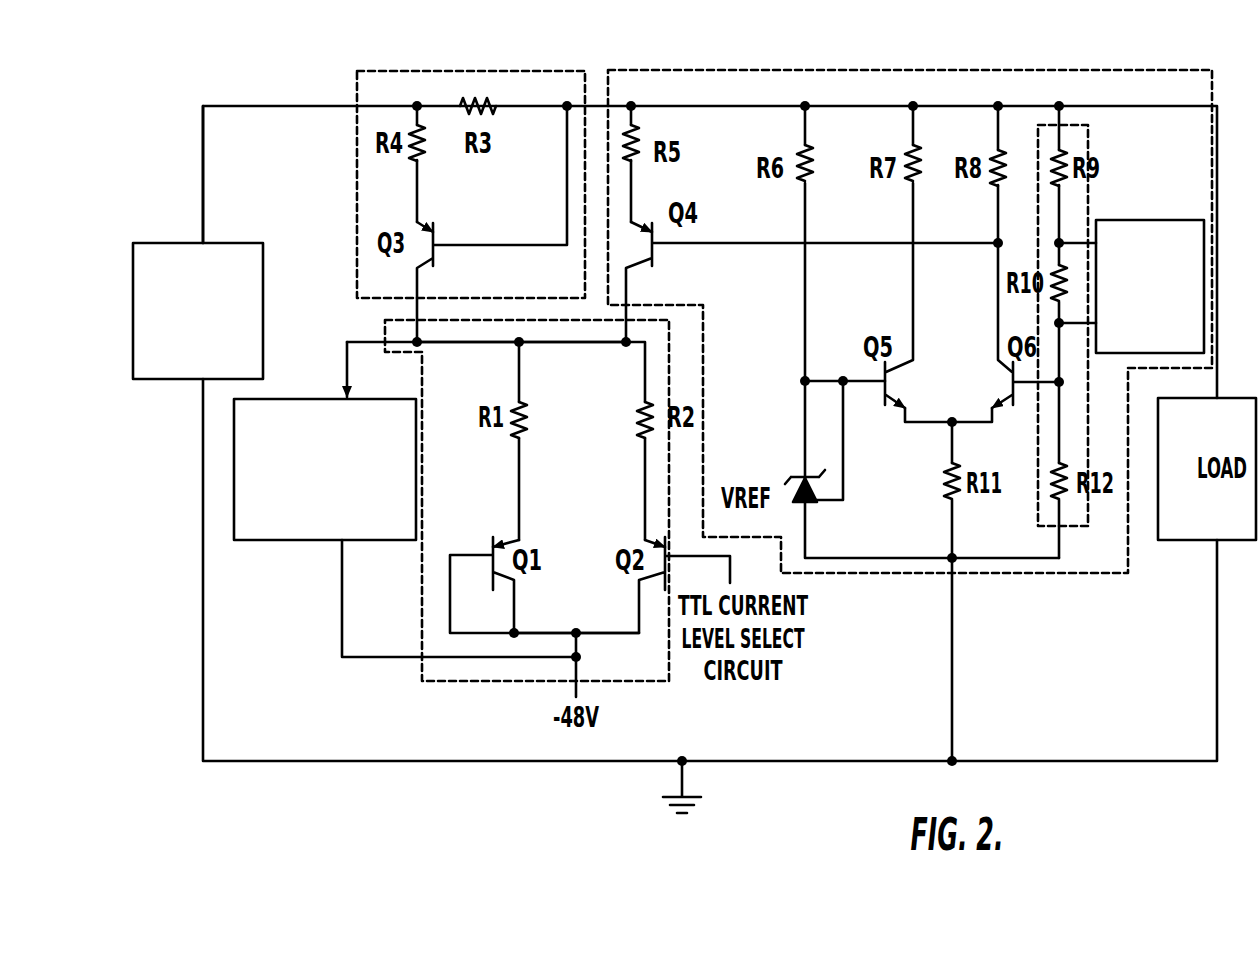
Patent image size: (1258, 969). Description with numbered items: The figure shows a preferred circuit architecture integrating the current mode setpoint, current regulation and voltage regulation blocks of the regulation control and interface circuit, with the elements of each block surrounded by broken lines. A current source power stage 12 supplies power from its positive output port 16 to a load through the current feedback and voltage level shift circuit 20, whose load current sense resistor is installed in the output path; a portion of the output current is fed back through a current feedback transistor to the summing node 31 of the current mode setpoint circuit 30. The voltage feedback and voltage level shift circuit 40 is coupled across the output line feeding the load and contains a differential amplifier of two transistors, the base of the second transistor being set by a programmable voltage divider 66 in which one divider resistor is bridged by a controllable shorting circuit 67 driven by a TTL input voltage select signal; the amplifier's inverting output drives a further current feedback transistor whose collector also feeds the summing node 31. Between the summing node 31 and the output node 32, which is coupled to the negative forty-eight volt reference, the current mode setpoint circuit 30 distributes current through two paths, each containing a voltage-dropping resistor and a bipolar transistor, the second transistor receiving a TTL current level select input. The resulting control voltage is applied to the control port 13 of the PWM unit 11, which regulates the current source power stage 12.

The pulse width modulator (PWM) unit 11 is at (314, 399).
The current source power stage 12 is at (233, 243).
The control port 13 is at (352, 396).
The output port 16 is at (200, 242).
The current feedback and voltage level shift circuit 20 is at (503, 71).
The current mode setpoint circuit 30 is at (440, 682).
The summing node 31 is at (540, 344).
The output node 32 is at (577, 630).
The voltage feedback and voltage level shift circuit 40 is at (858, 70).
The programmable voltage divider 66 is at (1090, 198).
The controllable shorting circuit 67 is at (1175, 220).